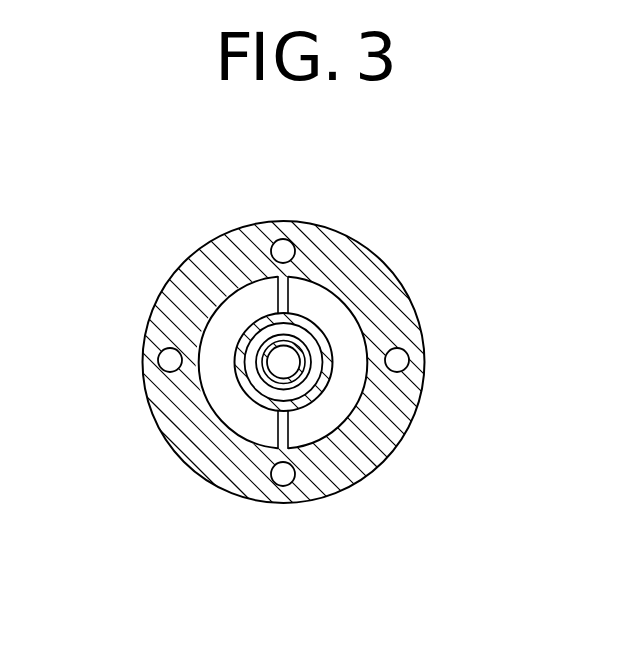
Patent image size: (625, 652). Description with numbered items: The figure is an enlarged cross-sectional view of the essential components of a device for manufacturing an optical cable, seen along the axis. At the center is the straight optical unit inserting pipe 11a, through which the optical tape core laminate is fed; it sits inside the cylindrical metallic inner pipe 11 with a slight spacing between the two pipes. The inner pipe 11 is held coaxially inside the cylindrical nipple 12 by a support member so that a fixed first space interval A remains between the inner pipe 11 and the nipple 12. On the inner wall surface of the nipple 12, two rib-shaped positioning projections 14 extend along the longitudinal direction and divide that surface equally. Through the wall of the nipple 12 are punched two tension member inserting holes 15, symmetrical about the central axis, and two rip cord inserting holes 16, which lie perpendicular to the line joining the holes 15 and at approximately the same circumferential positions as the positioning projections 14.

The inner pipe 11 is at (243, 368).
The optical unit inserting pipe 11a is at (266, 348).
The nipple 12 is at (383, 293).
The positioning projection 14 is at (286, 283).
The tension member inserting hole 15 is at (163, 359).
The rip cord inserting hole 16 is at (282, 246).
The first space interval A is at (347, 405).